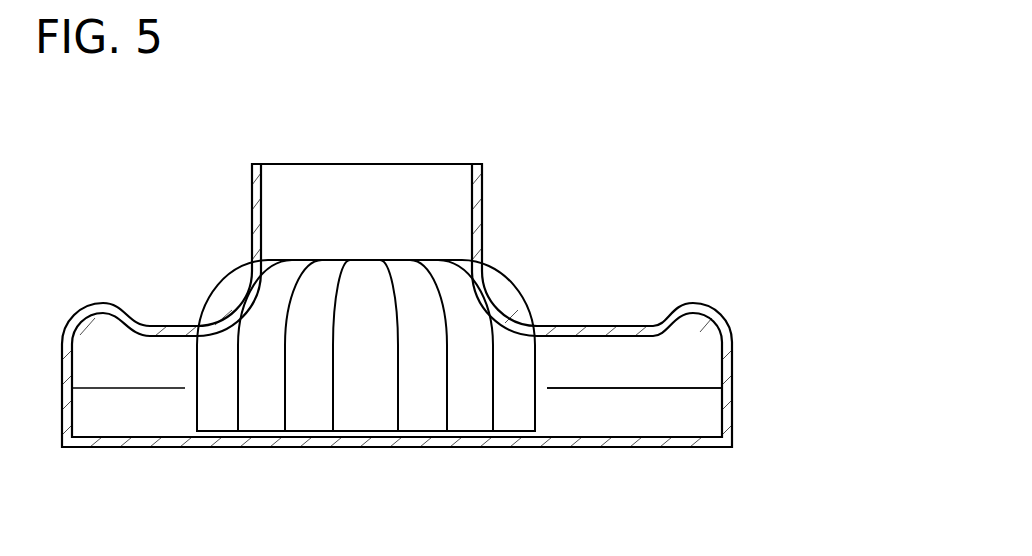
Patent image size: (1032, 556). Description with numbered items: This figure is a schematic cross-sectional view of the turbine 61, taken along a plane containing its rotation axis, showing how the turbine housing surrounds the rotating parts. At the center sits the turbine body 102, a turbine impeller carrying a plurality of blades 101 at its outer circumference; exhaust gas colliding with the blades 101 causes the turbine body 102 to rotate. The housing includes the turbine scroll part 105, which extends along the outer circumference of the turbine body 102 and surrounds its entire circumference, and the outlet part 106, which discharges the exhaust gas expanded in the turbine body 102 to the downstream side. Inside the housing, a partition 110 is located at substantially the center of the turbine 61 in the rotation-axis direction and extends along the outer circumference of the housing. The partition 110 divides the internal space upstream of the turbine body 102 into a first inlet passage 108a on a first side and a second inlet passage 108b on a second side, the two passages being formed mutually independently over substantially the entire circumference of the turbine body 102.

The turbine 61 is at (655, 176).
The blades 101 is at (285, 368).
The turbine body 102 is at (367, 382).
The turbine scroll part 105 is at (694, 304).
The outlet part 106 is at (471, 200).
The first inlet passage 108a is at (697, 372).
The second inlet passage 108b is at (697, 418).
The partition 110 is at (600, 388).